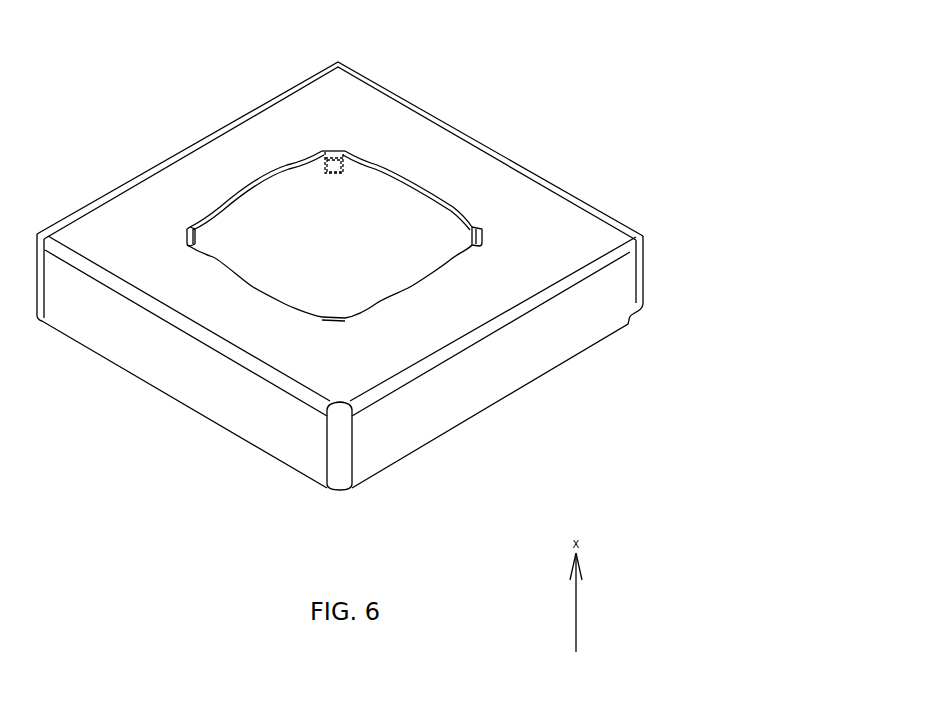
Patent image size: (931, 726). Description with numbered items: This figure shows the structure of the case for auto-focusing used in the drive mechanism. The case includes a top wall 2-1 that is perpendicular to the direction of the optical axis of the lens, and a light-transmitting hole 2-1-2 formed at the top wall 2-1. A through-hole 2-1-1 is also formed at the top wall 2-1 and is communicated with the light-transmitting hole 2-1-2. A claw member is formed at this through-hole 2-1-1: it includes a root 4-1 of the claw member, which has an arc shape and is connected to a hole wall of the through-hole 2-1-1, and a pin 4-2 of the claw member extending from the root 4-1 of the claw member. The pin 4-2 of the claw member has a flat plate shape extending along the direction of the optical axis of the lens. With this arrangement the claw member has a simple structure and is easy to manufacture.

The top wall 2-1 is at (380, 132).
The through-hole 2-1-1 is at (306, 150).
The light-transmitting hole 2-1-2 is at (352, 249).
The root of the claw member 4-1 is at (332, 150).
The pin of the claw member 4-2 is at (330, 172).